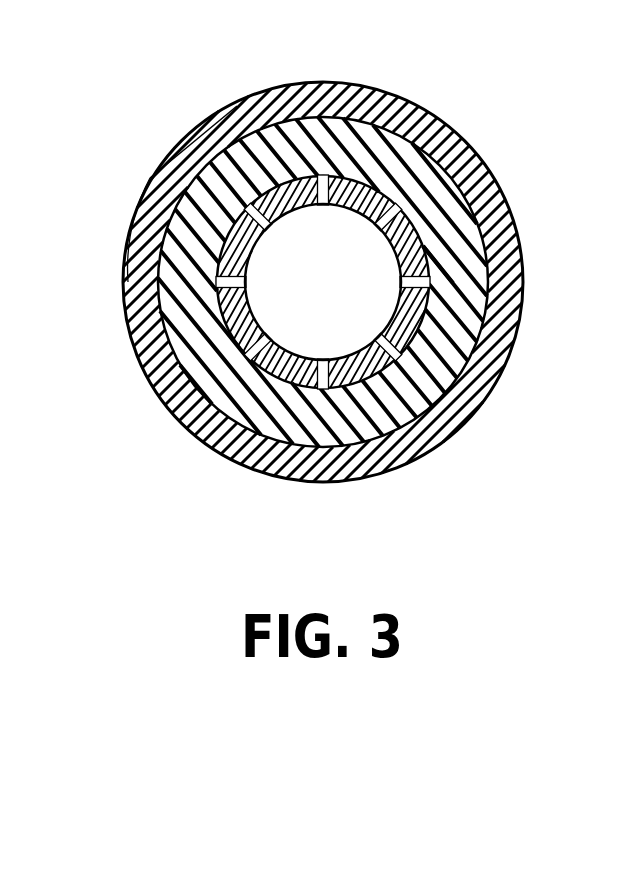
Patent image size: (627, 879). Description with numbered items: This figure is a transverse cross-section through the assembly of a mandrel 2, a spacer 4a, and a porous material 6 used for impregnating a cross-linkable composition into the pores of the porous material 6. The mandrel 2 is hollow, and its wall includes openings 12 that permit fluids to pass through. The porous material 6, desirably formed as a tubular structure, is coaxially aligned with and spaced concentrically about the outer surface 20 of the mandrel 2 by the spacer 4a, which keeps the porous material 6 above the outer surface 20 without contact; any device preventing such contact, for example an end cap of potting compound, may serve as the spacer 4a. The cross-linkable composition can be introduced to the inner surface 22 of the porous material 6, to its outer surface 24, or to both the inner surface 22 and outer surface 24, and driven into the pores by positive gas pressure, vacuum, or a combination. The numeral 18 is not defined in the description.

The mandrel 2 is at (427, 245).
The spacer 4a is at (447, 202).
The porous material 6 is at (430, 113).
The openings 12 is at (322, 188).
The slot 18 is at (347, 360).
The outer surface of the mandrel 20 is at (437, 303).
The inner surface of the porous material 22 is at (236, 115).
The outer surface of the porous material 24 is at (163, 168).